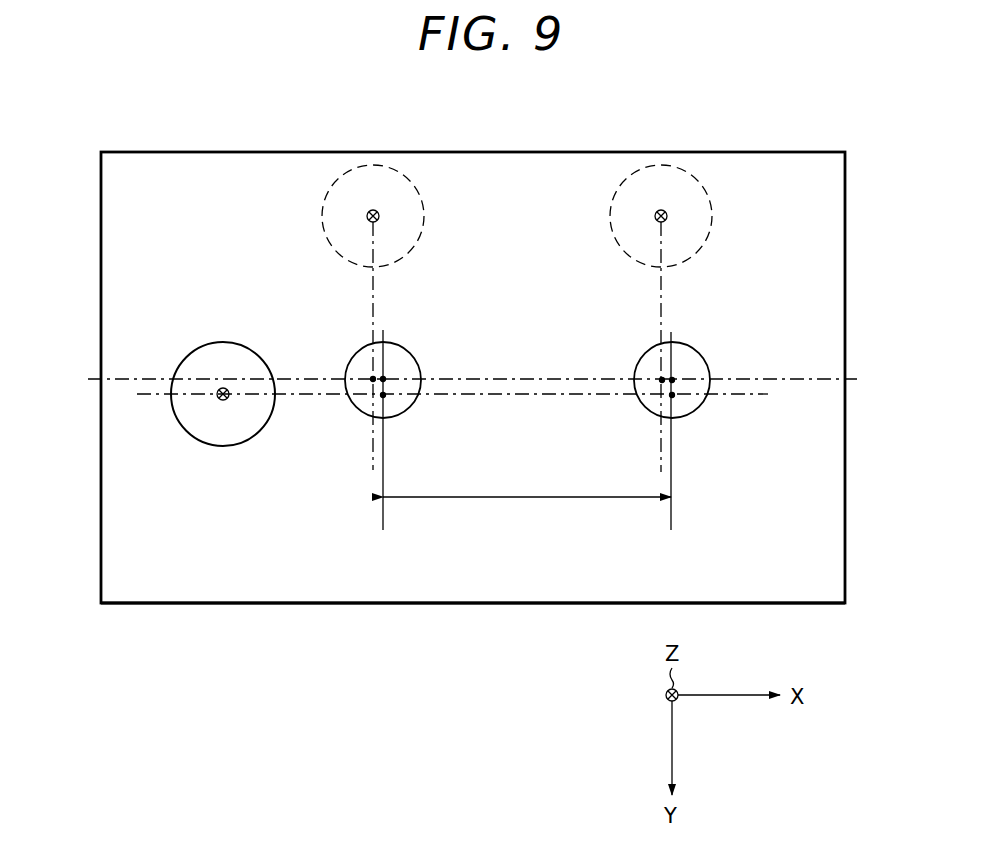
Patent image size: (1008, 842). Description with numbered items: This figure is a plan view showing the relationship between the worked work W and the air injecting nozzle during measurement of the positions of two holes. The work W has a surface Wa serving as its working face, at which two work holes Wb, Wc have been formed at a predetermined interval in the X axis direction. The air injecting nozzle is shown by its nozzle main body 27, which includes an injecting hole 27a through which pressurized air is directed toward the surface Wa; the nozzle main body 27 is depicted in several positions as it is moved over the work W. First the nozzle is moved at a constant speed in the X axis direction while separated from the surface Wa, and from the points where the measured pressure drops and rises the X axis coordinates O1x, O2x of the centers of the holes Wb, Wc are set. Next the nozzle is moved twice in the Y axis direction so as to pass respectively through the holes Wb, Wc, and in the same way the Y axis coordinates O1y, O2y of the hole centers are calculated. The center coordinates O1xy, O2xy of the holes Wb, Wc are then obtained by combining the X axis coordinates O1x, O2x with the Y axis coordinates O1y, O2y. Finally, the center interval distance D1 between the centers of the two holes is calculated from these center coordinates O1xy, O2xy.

The nozzle main body 27 is at (322, 216).
The injecting hole 27a is at (223, 389).
The work W is at (828, 275).
The surface Wa is at (488, 592).
The work hole Wb is at (369, 409).
The work hole Wc is at (657, 409).
The Y axis coordinate of first hole center O1y is at (373, 379).
The center coordinates of first hole O1xy is at (383, 379).
The X axis coordinate of first hole center O1x is at (384, 397).
The Y axis coordinate of second hole center O2y is at (661, 379).
The center coordinates of second hole O2xy is at (672, 379).
The X axis coordinate of second hole center O2x is at (673, 397).
The center interval distance D1 is at (527, 485).